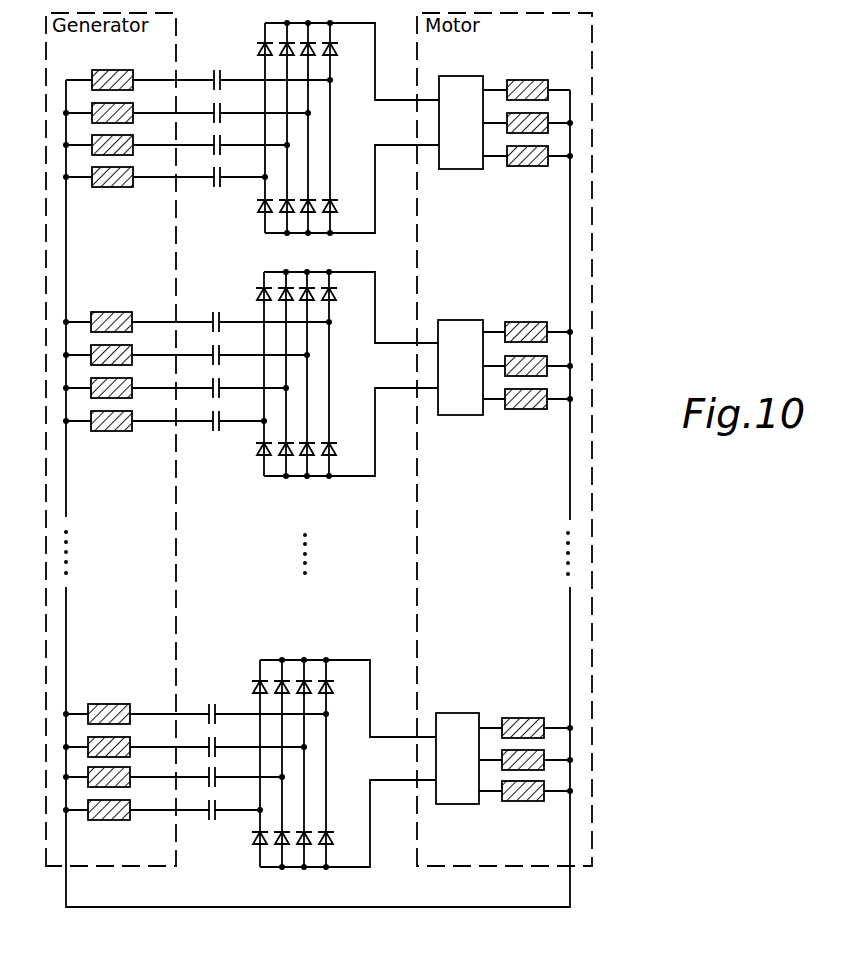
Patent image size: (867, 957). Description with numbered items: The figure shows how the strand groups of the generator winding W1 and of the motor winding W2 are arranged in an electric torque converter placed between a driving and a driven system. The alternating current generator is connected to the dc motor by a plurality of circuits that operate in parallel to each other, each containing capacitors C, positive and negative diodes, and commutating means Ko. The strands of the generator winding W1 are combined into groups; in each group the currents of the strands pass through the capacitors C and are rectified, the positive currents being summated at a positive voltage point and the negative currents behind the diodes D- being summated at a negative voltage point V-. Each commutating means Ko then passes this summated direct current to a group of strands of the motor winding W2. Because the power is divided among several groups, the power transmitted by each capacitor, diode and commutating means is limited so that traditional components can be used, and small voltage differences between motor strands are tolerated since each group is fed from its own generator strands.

The generator winding W1 is at (110, 469).
The capacitors C is at (202, 437).
The negative diodes D- is at (279, 535).
The negative voltage terminal V- is at (404, 452).
The commutating means Ko is at (459, 440).
The motor winding W2 is at (525, 474).